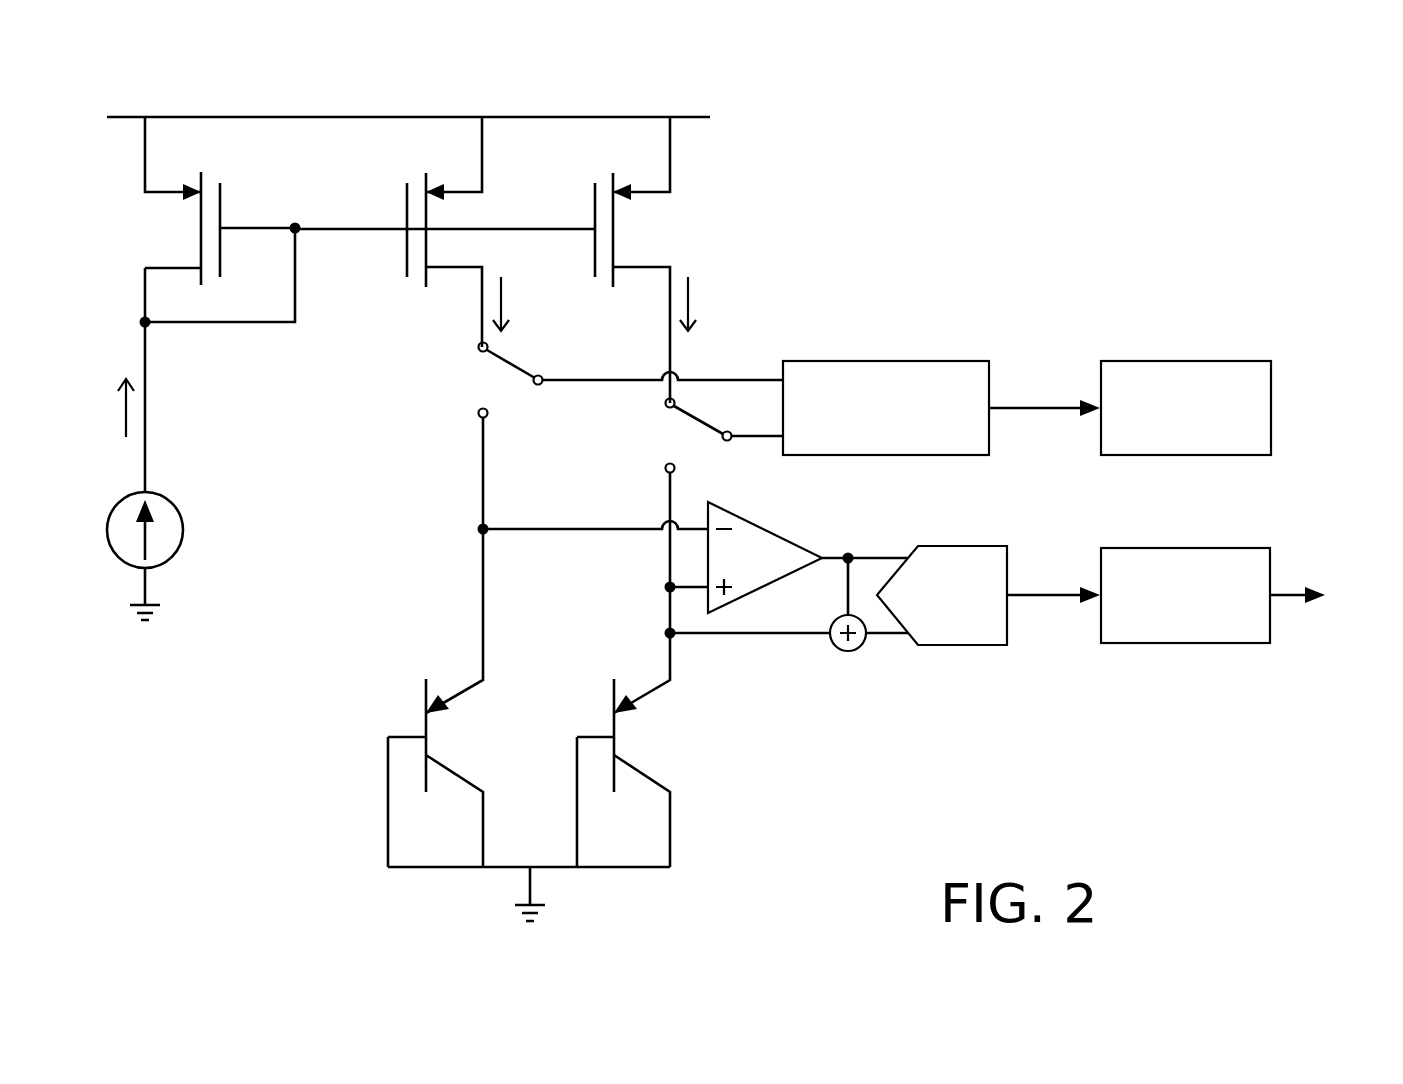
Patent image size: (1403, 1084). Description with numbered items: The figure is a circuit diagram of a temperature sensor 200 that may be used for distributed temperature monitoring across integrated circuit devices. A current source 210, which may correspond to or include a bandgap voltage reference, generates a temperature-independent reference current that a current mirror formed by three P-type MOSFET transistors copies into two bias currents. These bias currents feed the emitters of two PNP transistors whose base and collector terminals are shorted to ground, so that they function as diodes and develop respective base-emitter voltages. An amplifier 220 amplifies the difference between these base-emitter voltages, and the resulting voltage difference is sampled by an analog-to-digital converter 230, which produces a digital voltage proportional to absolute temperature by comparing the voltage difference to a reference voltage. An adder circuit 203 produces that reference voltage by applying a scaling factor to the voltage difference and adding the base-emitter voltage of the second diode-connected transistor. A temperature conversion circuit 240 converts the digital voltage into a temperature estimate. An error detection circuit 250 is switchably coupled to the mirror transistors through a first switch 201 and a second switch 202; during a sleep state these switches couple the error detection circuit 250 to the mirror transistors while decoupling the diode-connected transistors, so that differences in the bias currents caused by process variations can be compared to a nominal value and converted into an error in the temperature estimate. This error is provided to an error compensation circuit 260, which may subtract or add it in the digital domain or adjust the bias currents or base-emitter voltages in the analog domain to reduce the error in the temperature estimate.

The temperature sensor 200 is at (1262, 128).
The switch 201 is at (502, 360).
The switch 202 is at (690, 417).
The adder circuit 203 is at (836, 650).
The current source 210 is at (171, 500).
The amplifier 220 is at (765, 557).
The analog-to-digital converter 230 is at (942, 595).
The temperature conversion circuit 240 is at (1185, 595).
The error detection circuit 250 is at (886, 408).
The error compensation circuit 260 is at (1186, 408).